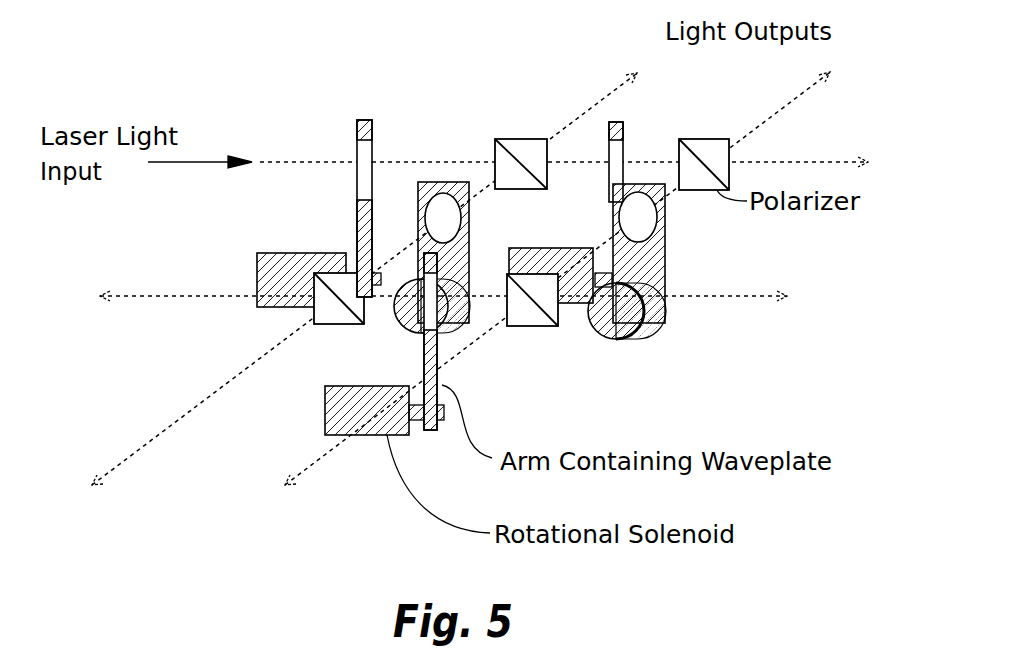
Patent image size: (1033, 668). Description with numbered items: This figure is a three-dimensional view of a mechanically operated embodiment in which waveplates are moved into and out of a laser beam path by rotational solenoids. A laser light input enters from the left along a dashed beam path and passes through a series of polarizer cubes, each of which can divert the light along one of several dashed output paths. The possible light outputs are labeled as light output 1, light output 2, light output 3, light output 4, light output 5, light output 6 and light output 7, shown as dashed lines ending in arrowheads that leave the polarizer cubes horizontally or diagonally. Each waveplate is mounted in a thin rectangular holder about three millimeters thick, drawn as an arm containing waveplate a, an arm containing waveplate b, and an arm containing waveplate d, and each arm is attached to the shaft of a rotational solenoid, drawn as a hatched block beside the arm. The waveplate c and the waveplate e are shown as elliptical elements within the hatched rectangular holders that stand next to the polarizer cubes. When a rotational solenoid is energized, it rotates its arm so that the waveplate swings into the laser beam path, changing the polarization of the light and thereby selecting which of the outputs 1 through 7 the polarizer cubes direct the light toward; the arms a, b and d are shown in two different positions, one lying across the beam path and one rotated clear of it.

The light output 1 is at (508, 160).
The light output 2 is at (708, 162).
The light output 3 is at (582, 164).
The light output 4 is at (631, 296).
The light output 5 is at (409, 401).
The light output 6 is at (215, 401).
The light output 7 is at (256, 293).
The arm containing waveplate a is at (375, 191).
The arm containing waveplate b is at (632, 148).
The waveplate c is at (665, 212).
The arm containing waveplate d is at (432, 341).
The waveplate e is at (454, 252).